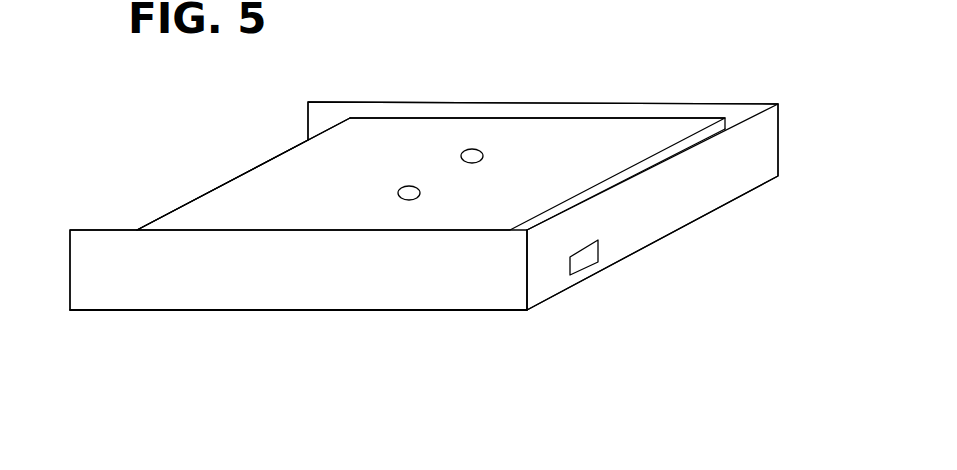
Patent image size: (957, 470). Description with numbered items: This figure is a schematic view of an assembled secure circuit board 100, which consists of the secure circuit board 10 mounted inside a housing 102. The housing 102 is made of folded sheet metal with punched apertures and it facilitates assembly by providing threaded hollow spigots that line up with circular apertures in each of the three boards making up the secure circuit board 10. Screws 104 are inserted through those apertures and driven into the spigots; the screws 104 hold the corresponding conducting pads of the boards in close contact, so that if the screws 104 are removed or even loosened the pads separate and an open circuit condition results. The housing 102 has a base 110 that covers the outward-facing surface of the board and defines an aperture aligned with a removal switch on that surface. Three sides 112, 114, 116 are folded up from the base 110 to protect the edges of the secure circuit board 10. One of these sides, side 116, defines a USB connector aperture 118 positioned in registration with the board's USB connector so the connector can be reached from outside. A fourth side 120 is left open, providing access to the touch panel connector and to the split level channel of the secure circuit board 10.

The assembled secure circuit board 100 is at (588, 52).
The secure circuit board 10 is at (430, 115).
The housing 102 is at (273, 328).
The screws 104 is at (407, 186).
The base 110 is at (472, 312).
The side 112 is at (110, 293).
The side 114 is at (328, 101).
The side 116 is at (767, 163).
The USB connector aperture 118 is at (587, 265).
The fourth side 120 is at (140, 156).